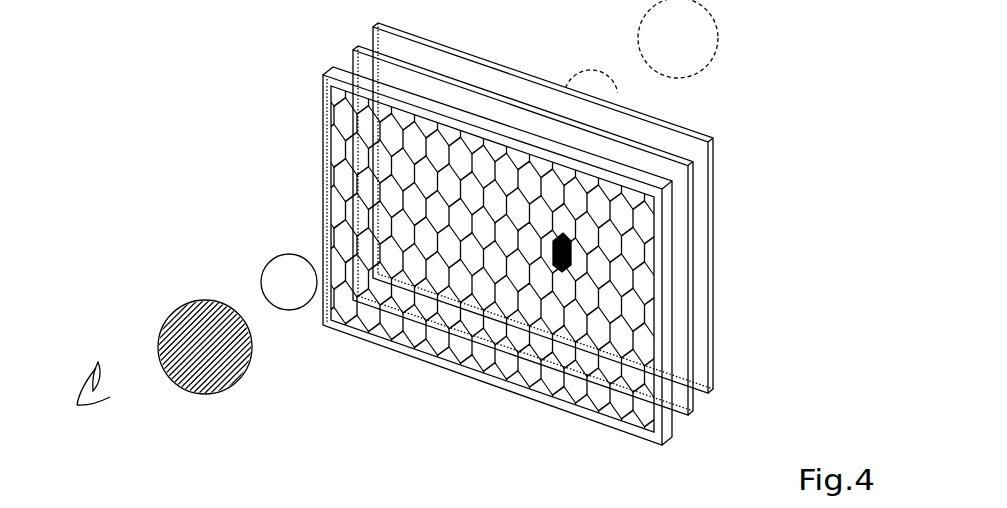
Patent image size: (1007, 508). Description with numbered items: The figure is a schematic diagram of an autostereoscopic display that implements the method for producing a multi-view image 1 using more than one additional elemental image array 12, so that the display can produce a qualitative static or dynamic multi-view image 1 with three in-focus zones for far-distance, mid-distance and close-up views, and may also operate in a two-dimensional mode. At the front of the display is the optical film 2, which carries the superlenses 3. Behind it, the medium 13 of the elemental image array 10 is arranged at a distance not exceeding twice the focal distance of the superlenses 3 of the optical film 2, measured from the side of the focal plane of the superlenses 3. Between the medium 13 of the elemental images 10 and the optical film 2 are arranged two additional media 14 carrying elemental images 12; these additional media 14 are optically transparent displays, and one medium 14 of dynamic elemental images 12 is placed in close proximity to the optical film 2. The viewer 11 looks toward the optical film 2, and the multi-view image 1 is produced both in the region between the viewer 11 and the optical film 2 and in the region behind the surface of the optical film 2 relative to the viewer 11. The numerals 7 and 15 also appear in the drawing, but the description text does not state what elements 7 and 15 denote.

The multi-view image 1 is at (284, 253).
The optical film 2 is at (667, 435).
The superlenses 3 is at (571, 258).
The substrate 7 is at (375, 505).
The elemental image array 10 is at (584, 500).
The viewer 11 is at (88, 365).
The additional elemental image array 12 is at (524, 500).
The medium 13 is at (668, 128).
The additional media 14 is at (373, 47).
The device 15 is at (356, 500).